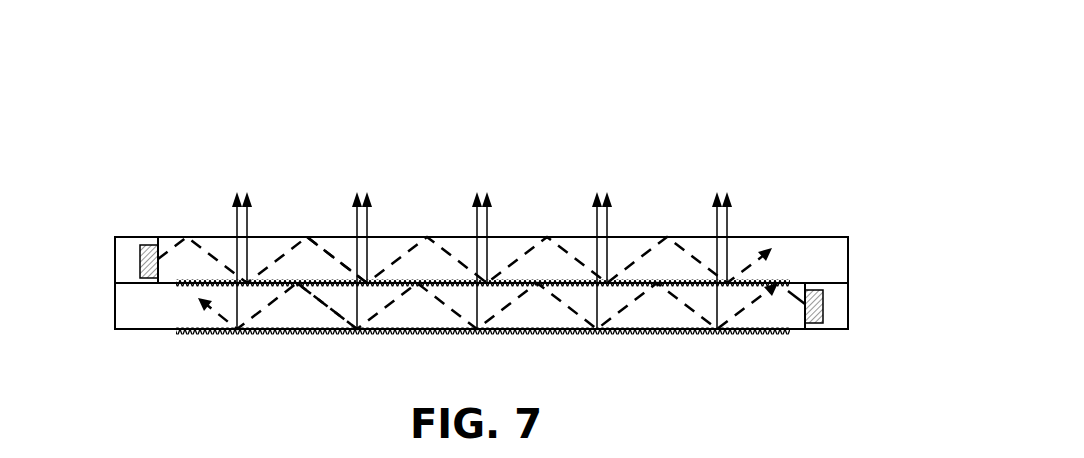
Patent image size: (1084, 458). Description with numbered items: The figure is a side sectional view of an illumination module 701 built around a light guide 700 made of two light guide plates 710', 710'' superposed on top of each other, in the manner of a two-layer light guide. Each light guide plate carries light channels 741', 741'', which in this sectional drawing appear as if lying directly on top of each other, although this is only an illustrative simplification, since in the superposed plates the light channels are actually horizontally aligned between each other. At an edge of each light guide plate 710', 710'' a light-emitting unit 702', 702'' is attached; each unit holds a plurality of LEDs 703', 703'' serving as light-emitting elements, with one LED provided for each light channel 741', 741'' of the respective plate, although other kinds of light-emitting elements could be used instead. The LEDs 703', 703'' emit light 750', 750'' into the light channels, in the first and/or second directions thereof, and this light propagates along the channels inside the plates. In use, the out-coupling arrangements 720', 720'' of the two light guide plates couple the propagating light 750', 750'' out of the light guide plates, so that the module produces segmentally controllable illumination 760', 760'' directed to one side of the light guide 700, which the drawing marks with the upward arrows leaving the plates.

The light guide 700 is at (844, 216).
The illumination module 701 is at (131, 121).
The light-emitting unit 702' is at (856, 333).
The light-emitting unit 702'' is at (101, 242).
The LED 703' is at (792, 342).
The LED 703'' is at (135, 221).
The light guide plate 710' is at (446, 344).
The light guide plate 710'' is at (539, 235).
The out-coupling arrangement 720' is at (483, 360).
The out-coupling arrangement 720'' is at (483, 222).
The light channel 741' is at (501, 352).
The light channel 741'' is at (465, 201).
The light 750' is at (296, 344).
The light 750'' is at (353, 190).
The segmentally controllable illumination 760' is at (455, 226).
The segmentally controllable illumination 760'' is at (487, 217).